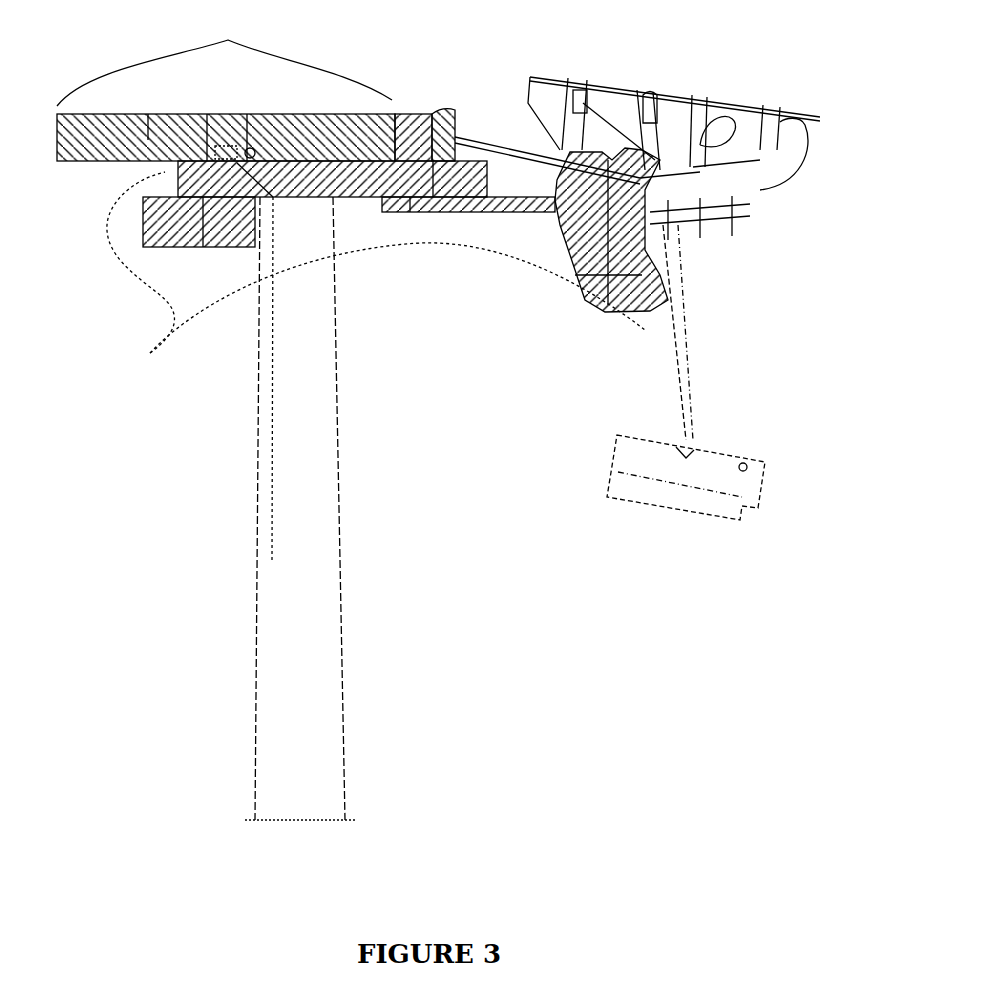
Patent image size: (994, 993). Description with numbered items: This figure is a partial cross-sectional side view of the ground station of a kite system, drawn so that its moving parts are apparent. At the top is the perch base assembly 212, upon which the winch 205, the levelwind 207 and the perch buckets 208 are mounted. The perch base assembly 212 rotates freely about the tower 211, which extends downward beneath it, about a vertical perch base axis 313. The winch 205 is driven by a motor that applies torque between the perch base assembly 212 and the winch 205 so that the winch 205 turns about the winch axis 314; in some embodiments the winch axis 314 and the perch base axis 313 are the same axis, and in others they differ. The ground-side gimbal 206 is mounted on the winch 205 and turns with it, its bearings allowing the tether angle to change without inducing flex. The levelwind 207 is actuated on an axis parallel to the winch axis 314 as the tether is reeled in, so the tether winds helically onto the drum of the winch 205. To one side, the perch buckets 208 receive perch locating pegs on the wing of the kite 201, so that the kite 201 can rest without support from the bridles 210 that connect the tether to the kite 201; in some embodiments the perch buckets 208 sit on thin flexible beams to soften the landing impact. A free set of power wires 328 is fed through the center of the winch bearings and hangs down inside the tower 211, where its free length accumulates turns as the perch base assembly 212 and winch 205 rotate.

The kite 201 is at (730, 190).
The winch 205 is at (224, 60).
The ground-side gimbal 206 is at (243, 150).
The levelwind 207 is at (417, 113).
The perch buckets 208 is at (575, 270).
The bridles 210 is at (495, 152).
The tower 211 is at (295, 357).
The perch base assembly 212 is at (150, 353).
The vertical perch base axis 313 is at (290, 114).
The winch axis 314 is at (213, 150).
The power wires 328 is at (283, 287).